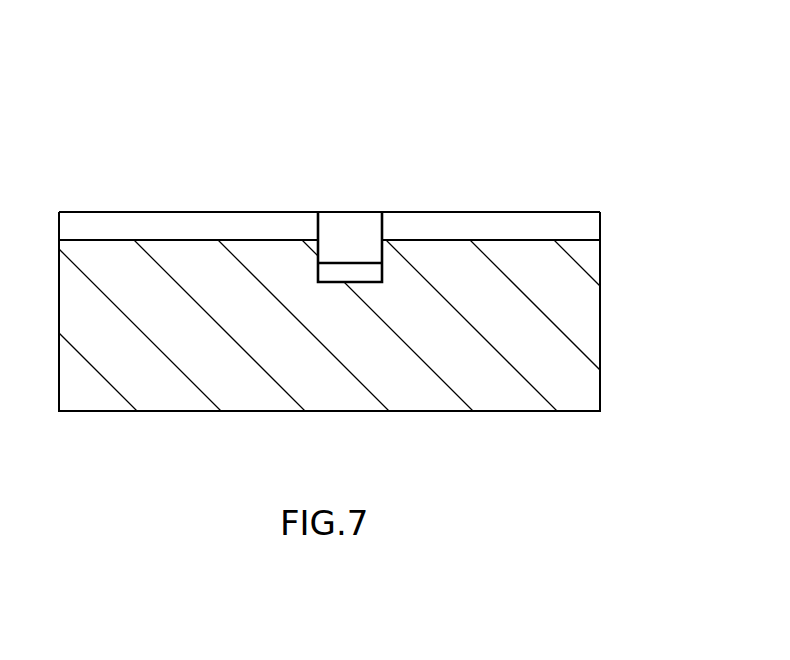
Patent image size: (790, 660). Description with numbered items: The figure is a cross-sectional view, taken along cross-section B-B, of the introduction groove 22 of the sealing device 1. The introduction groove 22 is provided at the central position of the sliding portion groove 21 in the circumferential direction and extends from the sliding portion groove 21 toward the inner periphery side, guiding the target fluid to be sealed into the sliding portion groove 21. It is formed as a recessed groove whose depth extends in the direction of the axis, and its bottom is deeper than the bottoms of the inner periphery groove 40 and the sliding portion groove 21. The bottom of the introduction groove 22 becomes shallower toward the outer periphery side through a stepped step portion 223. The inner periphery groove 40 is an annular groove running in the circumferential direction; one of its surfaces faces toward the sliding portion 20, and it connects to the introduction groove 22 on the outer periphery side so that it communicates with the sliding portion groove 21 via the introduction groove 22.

The sealing device 1 is at (604, 132).
The sliding portion 20 is at (618, 182).
The inner periphery groove 40 is at (501, 228).
The sliding portion groove 21 is at (327, 228).
The introduction groove 22 is at (368, 232).
The step portion 223 is at (355, 277).